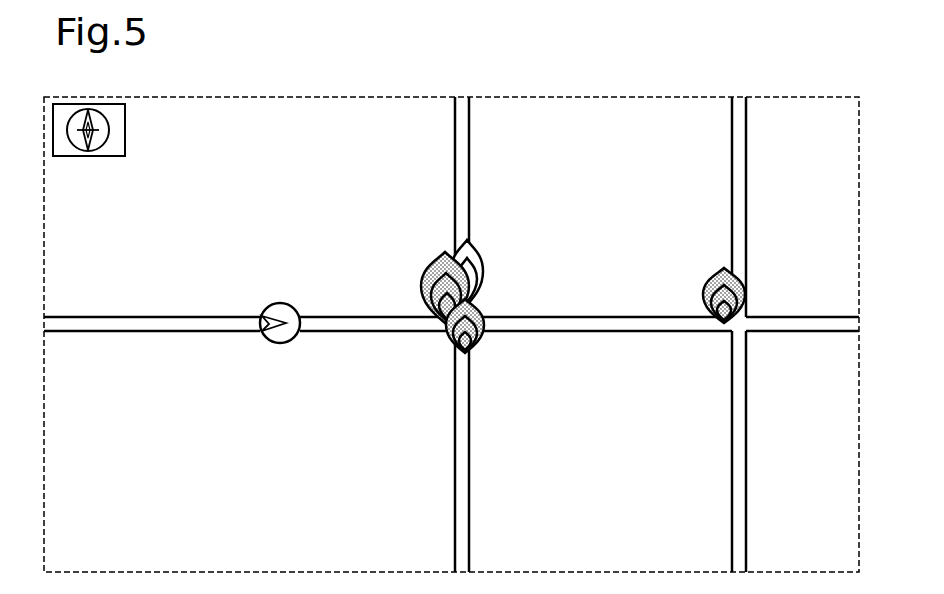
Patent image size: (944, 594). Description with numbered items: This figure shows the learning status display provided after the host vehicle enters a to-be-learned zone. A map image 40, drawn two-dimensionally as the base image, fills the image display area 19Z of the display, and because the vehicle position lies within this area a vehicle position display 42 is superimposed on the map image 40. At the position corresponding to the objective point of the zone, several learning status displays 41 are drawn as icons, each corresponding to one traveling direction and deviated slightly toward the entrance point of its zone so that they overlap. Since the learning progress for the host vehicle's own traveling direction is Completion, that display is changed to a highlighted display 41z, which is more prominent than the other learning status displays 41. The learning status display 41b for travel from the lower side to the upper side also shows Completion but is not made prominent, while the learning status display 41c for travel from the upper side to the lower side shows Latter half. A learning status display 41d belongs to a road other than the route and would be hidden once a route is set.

The image display area 19Z is at (792, 97).
The map image 40 is at (632, 110).
The learning status display 41 is at (542, 302).
The highlighted display 41z is at (430, 258).
The learning status display 41c is at (478, 260).
The learning status display 41b is at (445, 337).
The learning status display 41d is at (713, 276).
The vehicle position display 42 is at (282, 302).